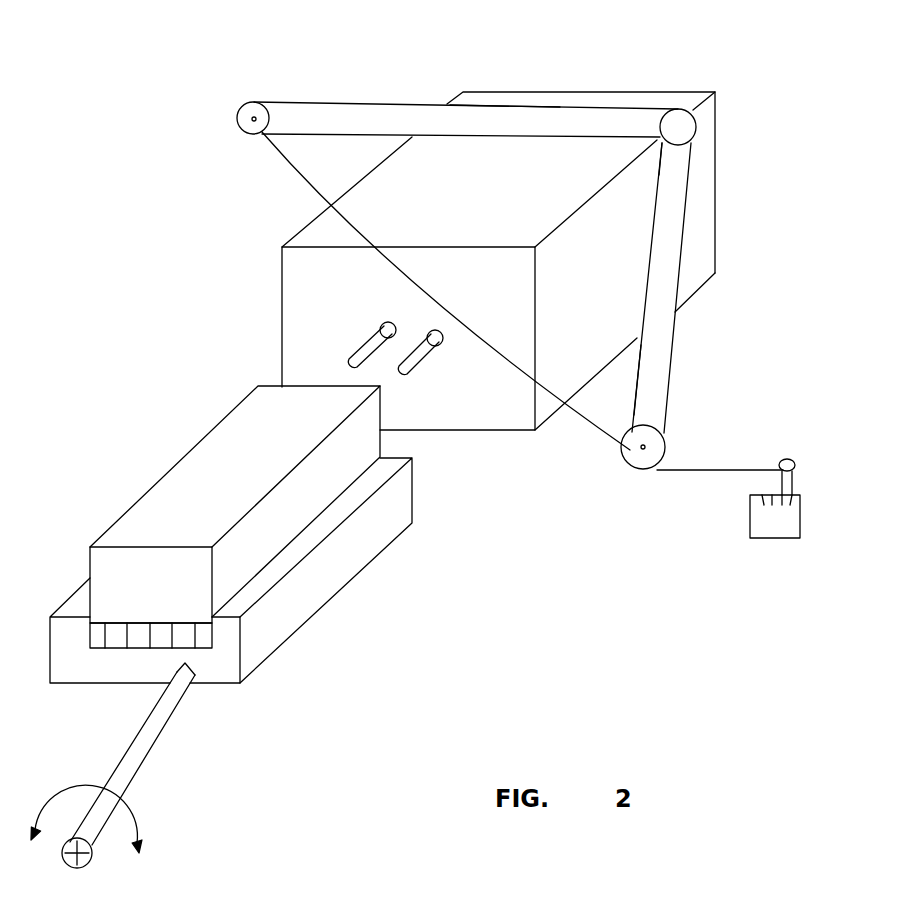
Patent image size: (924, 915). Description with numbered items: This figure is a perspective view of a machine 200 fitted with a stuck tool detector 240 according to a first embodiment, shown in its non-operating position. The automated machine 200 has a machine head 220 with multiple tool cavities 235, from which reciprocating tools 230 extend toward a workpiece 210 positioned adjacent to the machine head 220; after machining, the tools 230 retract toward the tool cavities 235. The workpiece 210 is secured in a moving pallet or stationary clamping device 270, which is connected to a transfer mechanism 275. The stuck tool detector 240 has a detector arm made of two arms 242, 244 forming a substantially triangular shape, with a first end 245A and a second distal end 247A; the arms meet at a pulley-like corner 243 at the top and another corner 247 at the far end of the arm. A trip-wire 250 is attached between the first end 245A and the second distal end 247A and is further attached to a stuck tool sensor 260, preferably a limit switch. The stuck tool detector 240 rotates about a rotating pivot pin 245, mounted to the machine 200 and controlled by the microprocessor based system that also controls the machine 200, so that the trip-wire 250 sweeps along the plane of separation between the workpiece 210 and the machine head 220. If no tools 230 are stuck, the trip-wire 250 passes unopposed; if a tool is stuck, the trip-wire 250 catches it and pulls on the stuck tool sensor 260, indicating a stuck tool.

The machine 200 is at (857, 47).
The workpiece 210 is at (150, 515).
The machine head 220 is at (702, 212).
The reciprocating tools 230 is at (357, 348).
The tool cavities 235 is at (380, 328).
The stuck tool detector 240 is at (665, 347).
The detector arm 242 is at (680, 157).
The pulley 243 is at (677, 117).
The detector arm 244 is at (520, 120).
The rotating pivot pin 245 is at (663, 445).
The first end 245A is at (647, 397).
The pulley 247 is at (245, 108).
The second distal end 247A is at (328, 113).
The trip-wire 250 is at (303, 173).
The stuck tool sensor 260 is at (763, 530).
The clamping device 270 is at (300, 605).
The transfer mechanism 275 is at (143, 758).